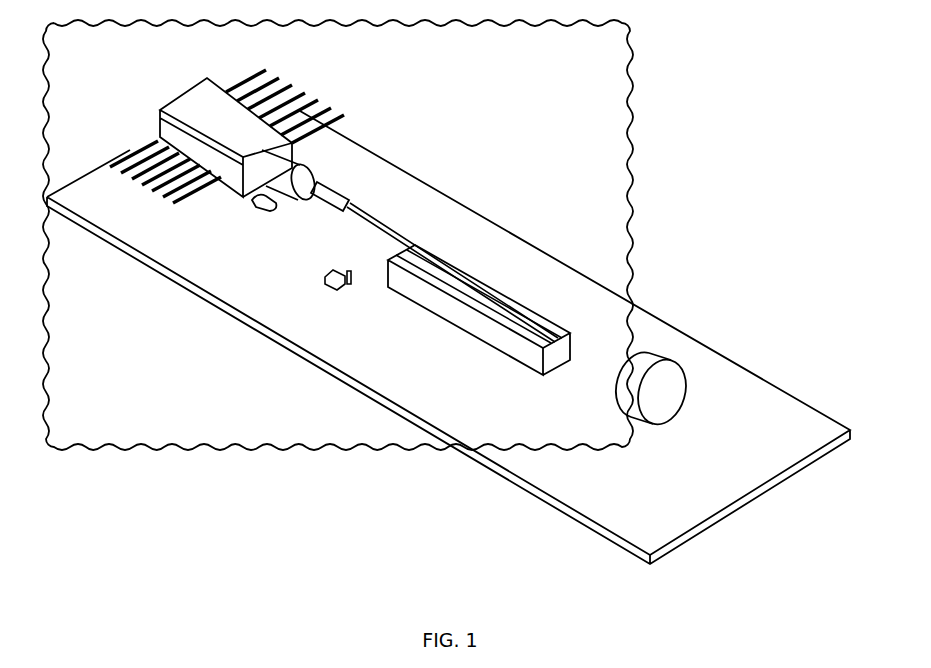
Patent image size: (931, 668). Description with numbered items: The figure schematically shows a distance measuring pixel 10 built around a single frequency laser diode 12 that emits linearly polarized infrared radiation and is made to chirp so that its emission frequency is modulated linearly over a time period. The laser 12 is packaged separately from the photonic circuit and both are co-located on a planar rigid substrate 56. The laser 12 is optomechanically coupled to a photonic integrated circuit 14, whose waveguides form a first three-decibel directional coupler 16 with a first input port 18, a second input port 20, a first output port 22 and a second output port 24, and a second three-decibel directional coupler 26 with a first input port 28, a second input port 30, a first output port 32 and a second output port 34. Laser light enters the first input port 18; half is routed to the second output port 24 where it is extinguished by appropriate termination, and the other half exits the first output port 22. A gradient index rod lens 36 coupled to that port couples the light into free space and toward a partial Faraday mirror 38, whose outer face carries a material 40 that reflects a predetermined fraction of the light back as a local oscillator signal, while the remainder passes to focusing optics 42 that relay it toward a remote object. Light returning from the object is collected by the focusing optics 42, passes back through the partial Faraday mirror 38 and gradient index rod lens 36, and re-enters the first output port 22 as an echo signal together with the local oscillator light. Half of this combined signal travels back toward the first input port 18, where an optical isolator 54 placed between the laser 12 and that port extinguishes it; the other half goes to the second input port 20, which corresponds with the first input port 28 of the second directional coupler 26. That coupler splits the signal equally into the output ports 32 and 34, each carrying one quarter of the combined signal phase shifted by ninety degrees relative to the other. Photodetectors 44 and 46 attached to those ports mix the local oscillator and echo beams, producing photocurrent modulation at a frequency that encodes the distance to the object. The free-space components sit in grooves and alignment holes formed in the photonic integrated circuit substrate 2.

The photonic integrated circuit substrate 2 is at (537, 362).
The distance measuring pixel 10 is at (265, 422).
The single frequency laser diode 12 is at (228, 110).
The photonic integrated circuit 14 is at (472, 318).
The first 3 dB directional coupler 16 is at (513, 307).
The first input port 18 is at (451, 266).
The second input port 20 is at (490, 307).
The first output port 22 is at (548, 326).
The second output port 24 is at (505, 322).
The second 3 dB directional coupler 26 is at (470, 303).
The first input port 28 is at (490, 307).
The second input port 30 is at (494, 282).
The first output port 32 is at (432, 276).
The second output port 34 is at (325, 284).
The gradient index rod lens 36 is at (562, 333).
The partial Faraday mirror 38 is at (622, 293).
The reflective material 40 is at (569, 360).
The focusing optics 42 is at (660, 353).
The photodetector 44 is at (387, 260).
The photodetector 46 is at (398, 291).
The optical isolator 54 is at (446, 262).
The planar rigid substrate 56 is at (727, 493).